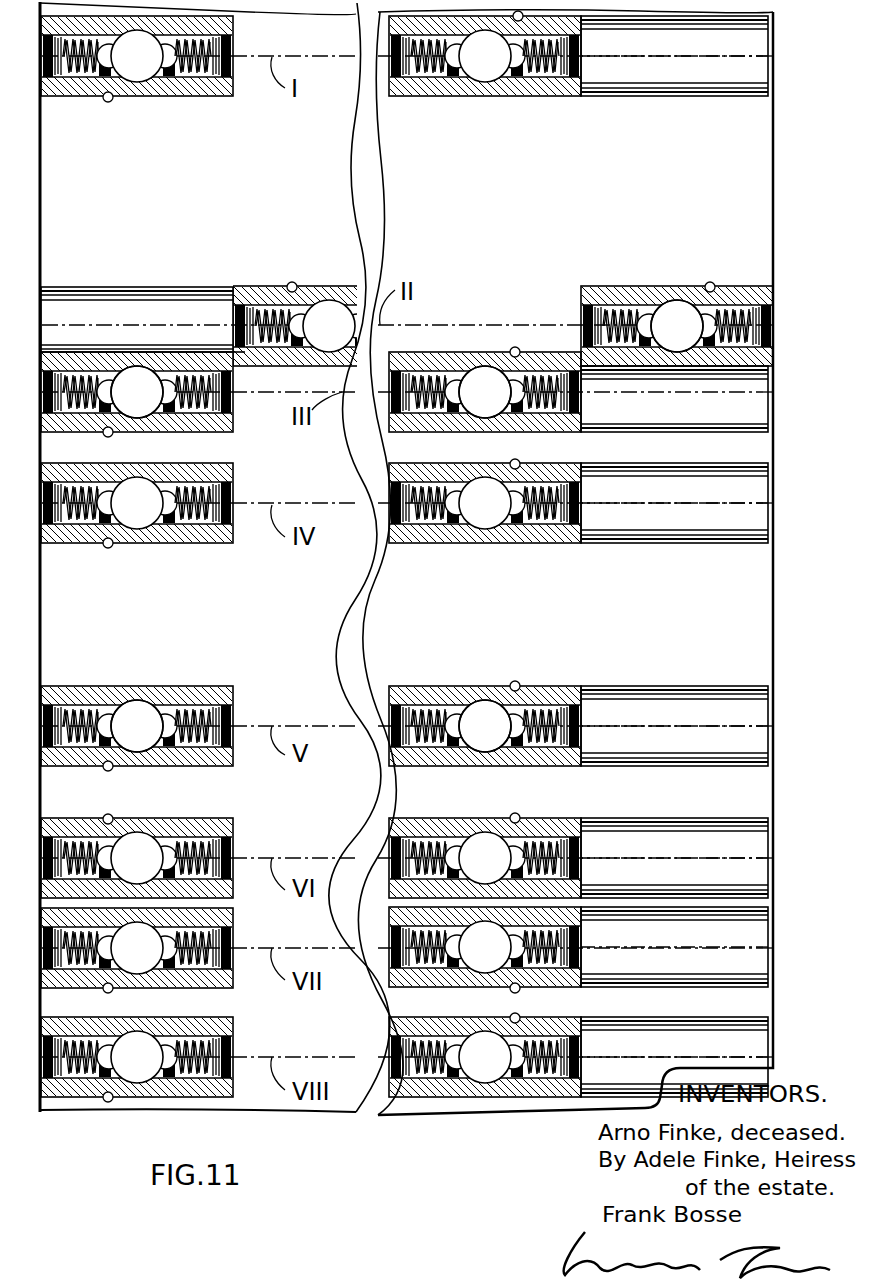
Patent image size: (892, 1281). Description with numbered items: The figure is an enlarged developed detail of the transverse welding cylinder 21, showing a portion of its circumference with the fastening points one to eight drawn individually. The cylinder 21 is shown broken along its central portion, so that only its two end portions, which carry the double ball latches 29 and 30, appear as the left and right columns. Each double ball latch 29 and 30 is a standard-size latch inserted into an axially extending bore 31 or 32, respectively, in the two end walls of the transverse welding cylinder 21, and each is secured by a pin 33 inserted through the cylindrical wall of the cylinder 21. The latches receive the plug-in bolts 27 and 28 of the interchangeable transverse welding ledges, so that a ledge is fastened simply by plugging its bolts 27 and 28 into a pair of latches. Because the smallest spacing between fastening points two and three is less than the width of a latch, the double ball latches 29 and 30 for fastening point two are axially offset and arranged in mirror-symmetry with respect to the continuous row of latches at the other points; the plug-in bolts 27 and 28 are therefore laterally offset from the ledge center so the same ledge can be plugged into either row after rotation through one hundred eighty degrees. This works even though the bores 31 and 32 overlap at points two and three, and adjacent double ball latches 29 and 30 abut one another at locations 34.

The transverse welding cylinder 21 is at (760, 172).
The plug-in bolt 27 is at (140, 372).
The plug-in bolt 28 is at (484, 410).
The double ball latch 29 is at (230, 422).
The double ball latch 30 is at (297, 292).
The axially extending bore 31 is at (88, 435).
The axially extending bore 32 is at (140, 303).
The pin 33 is at (110, 437).
The abutment location 34 is at (236, 356).